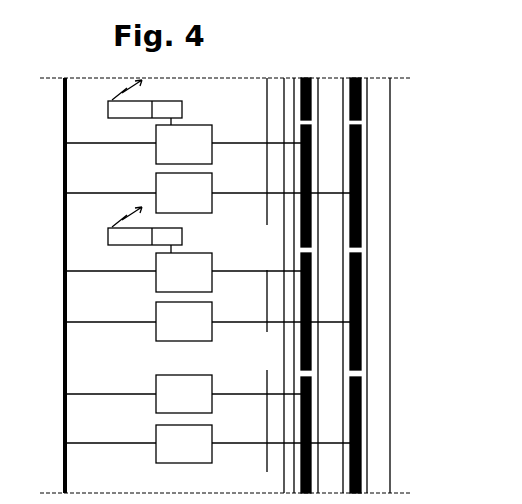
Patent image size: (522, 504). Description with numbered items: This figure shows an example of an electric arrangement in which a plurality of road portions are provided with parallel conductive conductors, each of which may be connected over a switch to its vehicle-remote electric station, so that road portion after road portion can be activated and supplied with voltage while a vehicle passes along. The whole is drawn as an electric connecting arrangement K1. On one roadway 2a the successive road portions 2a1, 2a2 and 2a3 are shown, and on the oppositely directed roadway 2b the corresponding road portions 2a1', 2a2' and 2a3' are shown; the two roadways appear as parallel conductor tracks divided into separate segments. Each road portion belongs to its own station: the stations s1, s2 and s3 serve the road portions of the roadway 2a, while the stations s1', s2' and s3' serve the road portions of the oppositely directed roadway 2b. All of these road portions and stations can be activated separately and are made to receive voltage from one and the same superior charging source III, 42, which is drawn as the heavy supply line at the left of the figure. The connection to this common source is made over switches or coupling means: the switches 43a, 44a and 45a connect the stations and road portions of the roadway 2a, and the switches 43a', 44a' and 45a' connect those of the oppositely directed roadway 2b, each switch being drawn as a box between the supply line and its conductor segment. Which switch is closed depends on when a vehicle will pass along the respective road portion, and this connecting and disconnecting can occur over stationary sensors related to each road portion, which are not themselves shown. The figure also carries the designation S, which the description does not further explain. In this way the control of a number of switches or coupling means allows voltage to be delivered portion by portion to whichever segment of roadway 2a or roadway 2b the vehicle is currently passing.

The superior charging source 42 is at (62, 212).
The superior charging source III is at (63, 238).
The switch or coupling means 43a is at (189, 147).
The switch or coupling means 43a' is at (214, 193).
The switch or coupling means 44a is at (189, 274).
The switch or coupling means 44a' is at (214, 320).
The switch or coupling means 45a is at (189, 389).
The switch or coupling means 45a' is at (214, 438).
The roadway 2a is at (305, 78).
The road portion 2a1 is at (264, 172).
The road portion 2a2 is at (264, 298).
The road portion 2a3 is at (264, 423).
The oppositely directed roadway 2b is at (365, 99).
The road portion 2a1' is at (405, 186).
The road portion 2a2' is at (404, 311).
The road portion 2a3' is at (402, 435).
The electric connecting arrangement K1 is at (38, 101).
The signal S is at (114, 343).
The station s1 is at (142, 112).
The station s2 is at (142, 239).
The station s3 is at (176, 360).
The station s1' is at (236, 166).
The station s2' is at (236, 293).
The station s3' is at (236, 420).